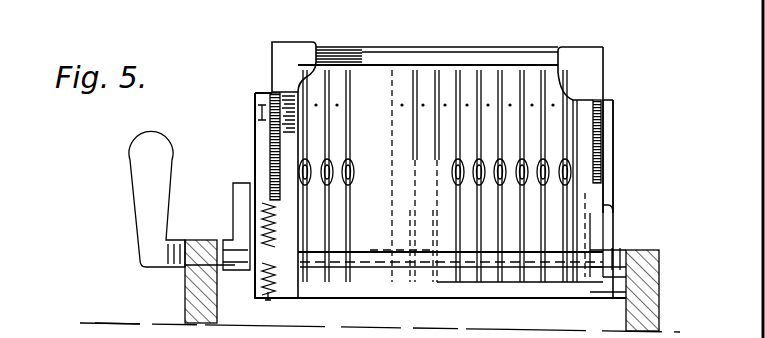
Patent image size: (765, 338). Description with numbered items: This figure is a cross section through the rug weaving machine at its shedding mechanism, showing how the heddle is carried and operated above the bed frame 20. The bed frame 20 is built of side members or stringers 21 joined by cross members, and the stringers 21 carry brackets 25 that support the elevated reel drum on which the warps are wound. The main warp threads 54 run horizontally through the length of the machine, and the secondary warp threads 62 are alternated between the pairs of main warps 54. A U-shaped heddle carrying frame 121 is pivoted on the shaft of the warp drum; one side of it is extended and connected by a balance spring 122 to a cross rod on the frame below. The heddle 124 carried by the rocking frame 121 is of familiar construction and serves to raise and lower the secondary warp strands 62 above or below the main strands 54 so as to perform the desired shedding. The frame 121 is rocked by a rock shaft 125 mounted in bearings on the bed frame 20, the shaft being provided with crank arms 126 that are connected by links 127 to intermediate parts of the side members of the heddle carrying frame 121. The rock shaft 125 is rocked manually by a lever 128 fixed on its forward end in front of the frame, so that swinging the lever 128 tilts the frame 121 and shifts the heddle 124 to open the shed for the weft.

The bed frame 20 is at (185, 300).
The side members or stringers 21 is at (215, 290).
The brackets 25 is at (248, 87).
The main warp threads 54 is at (467, 108).
The secondary warp threads 62 is at (458, 172).
The heddle carrying frame 121 is at (270, 157).
The balance spring 122 is at (262, 276).
The heddle 124 is at (540, 88).
The rock shaft 125 is at (605, 252).
The crank arms 126 is at (242, 210).
The links 127 is at (262, 148).
The lever 128 is at (145, 200).